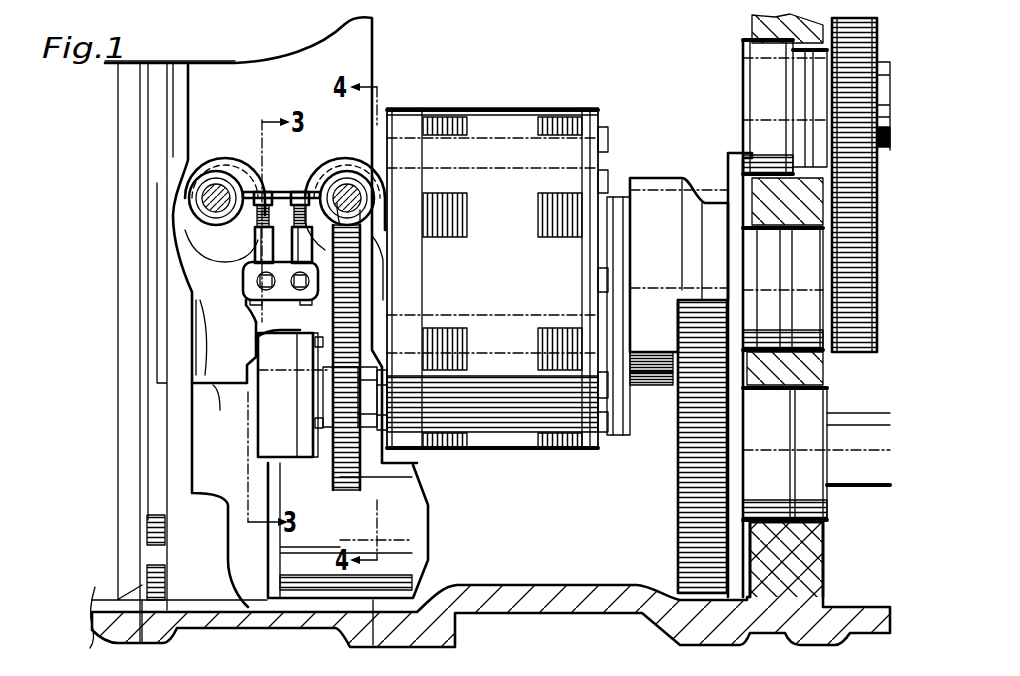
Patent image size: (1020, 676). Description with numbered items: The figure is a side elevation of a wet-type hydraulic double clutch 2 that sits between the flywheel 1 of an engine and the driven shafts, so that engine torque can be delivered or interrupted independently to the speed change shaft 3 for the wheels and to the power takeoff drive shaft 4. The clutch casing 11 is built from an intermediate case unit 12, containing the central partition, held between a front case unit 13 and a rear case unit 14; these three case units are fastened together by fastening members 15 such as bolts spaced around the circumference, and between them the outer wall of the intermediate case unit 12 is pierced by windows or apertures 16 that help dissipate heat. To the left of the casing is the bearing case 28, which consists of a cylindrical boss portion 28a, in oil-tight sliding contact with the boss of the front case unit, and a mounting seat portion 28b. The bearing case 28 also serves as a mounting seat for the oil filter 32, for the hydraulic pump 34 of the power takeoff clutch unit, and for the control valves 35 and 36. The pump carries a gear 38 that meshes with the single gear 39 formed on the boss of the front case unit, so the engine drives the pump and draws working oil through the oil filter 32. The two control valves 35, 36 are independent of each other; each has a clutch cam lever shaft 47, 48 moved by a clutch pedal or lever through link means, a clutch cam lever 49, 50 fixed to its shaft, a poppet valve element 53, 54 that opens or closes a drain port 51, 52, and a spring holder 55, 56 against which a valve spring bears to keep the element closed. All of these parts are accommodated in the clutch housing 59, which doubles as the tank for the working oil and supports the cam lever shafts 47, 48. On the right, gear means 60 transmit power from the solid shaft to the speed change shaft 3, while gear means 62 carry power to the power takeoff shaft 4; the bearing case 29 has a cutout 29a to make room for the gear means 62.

The flywheel 1 is at (88, 629).
The hydraulic double clutch of the wet type 2 is at (549, 104).
The speed change shaft 3 is at (882, 72).
The power takeoff drive shaft 4 is at (858, 492).
The clutch casing 11 is at (503, 456).
The intermediate case unit 12 is at (490, 108).
The front case unit 13 is at (410, 108).
The rear case unit 14 is at (590, 108).
The fastening members 15 is at (605, 148).
The windows or apertures 16 is at (540, 349).
The bearing case 28 is at (205, 353).
The cylindrical boss portion 28a is at (200, 298).
The mounting seat portion 28b is at (220, 405).
The bearing case 29 is at (652, 178).
The cutout 29a is at (675, 378).
The oil filter 32 is at (418, 568).
The hydraulic pump 34 is at (297, 465).
The control valve 35 is at (218, 158).
The control valve 36 is at (350, 160).
The gear 38 is at (346, 490).
The gear 39 is at (360, 267).
The clutch cam lever shaft 47 is at (205, 197).
The clutch cam lever shaft 48 is at (385, 198).
The clutch cam lever 49 is at (238, 165).
The clutch cam lever 50 is at (300, 182).
The drain port 51 is at (247, 302).
The drain port 52 is at (365, 328).
The poppet valve element 53 is at (244, 262).
The poppet valve element 54 is at (372, 240).
The spring holder 55 is at (240, 225).
The spring holder 56 is at (316, 170).
The clutch housing 59 is at (578, 605).
The gear means 60 is at (880, 203).
The gear means 62 is at (668, 352).